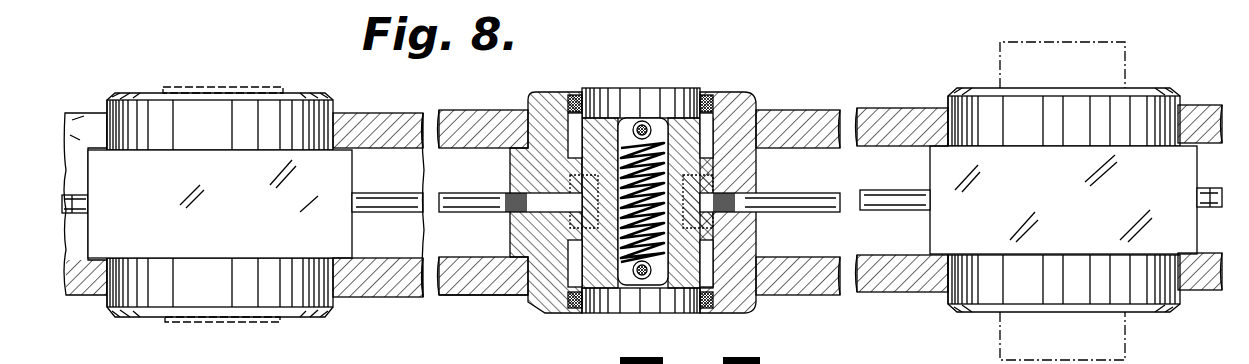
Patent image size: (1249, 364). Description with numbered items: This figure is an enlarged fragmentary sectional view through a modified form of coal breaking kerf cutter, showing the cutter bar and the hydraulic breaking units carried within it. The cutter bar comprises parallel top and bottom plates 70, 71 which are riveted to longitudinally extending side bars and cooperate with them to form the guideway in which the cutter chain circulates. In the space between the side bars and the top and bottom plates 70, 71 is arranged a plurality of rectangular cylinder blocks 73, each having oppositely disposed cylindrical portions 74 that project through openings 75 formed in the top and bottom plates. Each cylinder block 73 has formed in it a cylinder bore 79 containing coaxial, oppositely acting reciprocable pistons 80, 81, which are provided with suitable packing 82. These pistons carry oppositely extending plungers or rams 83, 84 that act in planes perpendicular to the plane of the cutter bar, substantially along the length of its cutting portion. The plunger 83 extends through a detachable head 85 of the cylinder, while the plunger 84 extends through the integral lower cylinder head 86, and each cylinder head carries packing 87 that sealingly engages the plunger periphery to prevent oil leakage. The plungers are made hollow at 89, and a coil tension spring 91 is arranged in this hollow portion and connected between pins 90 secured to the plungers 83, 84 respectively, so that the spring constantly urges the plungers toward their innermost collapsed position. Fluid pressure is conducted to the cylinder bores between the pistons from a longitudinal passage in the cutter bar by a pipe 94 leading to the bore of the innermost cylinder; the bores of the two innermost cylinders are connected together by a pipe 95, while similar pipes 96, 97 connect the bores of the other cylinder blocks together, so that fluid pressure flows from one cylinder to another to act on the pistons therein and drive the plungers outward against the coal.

The top plate 70 is at (445, 110).
The bottom plate 71 is at (488, 283).
The cylinder block 73 is at (320, 186).
The cylindrical portion 74 is at (124, 113).
The opening 75 is at (355, 118).
The cylinder bore 79 is at (538, 92).
The piston 80 is at (580, 160).
The piston 81 is at (570, 233).
The packing 82 is at (570, 176).
The plunger 83 is at (210, 92).
The plunger 84 is at (213, 322).
The detachable head 85 is at (720, 95).
The integral lower cylinder head 86 is at (575, 310).
The packing 87 is at (706, 96).
The hollow portion 89 is at (625, 127).
The pin 90 is at (643, 121).
The coil tension spring 91 is at (653, 273).
The pipe 94 is at (76, 212).
The pipe 95 is at (385, 210).
The pipe 96 is at (822, 200).
The pipe 97 is at (1207, 212).